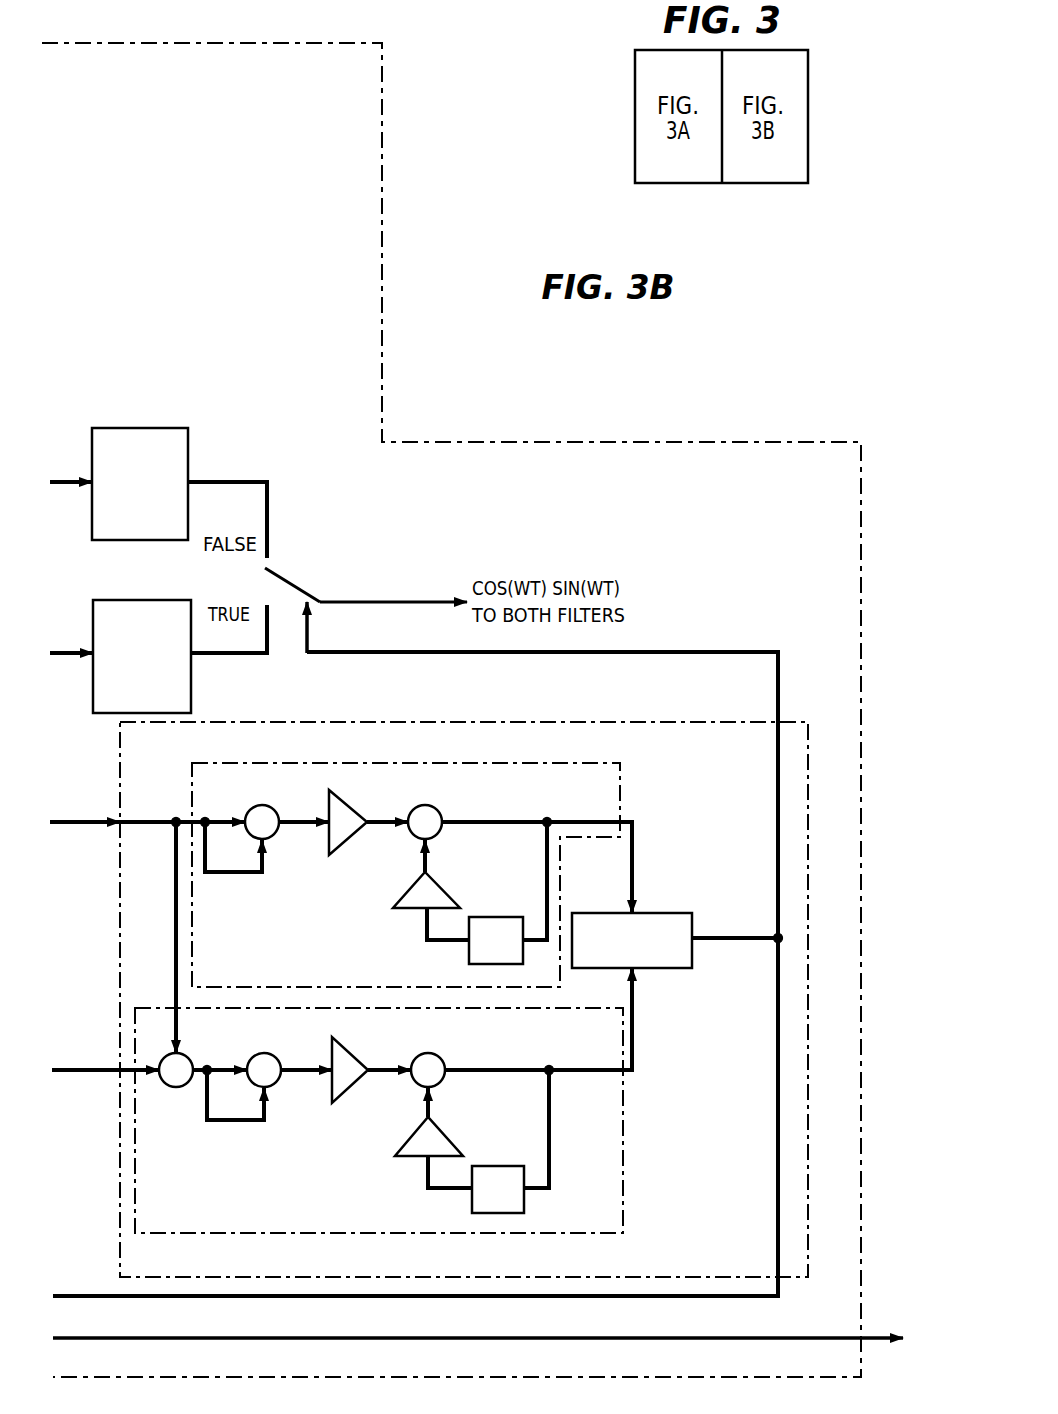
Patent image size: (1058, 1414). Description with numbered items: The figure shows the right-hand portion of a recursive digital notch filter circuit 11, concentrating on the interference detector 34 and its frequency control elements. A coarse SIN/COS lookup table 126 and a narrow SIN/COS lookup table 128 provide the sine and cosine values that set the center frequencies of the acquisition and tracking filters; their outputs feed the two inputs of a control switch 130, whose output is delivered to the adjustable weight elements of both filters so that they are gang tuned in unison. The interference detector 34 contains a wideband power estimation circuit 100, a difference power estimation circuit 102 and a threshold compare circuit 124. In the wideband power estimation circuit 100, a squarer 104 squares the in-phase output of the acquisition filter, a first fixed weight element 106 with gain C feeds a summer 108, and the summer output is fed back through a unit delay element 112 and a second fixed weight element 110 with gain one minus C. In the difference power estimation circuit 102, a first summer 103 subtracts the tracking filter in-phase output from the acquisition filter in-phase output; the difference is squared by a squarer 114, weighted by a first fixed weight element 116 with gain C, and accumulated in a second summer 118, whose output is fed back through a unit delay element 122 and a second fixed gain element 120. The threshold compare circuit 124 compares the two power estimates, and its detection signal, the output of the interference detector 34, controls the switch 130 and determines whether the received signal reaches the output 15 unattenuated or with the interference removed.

The recursive digital notch filter circuit 11 is at (578, 408).
The output 15 is at (865, 1338).
The interference detector 34 is at (434, 722).
The wideband power estimation circuit 100 is at (622, 772).
The difference power estimation circuit 102 is at (624, 1156).
The first summer 103 is at (173, 1087).
The squarer 104 is at (250, 810).
The first fixed weight element 106 is at (328, 812).
The summer 108 is at (455, 828).
The second fixed weight element 110 is at (408, 892).
The unit delay element 112 is at (490, 917).
The squarer 114 is at (252, 1056).
The first fixed weight element 116 is at (331, 1060).
The second summer 118 is at (446, 1078).
The second fixed gain element 120 is at (452, 1140).
The unit delay element 122 is at (525, 1200).
The threshold compare circuit 124 is at (668, 913).
The coarse SIN/COS lookup table 126 is at (165, 428).
The narrow SIN/COS lookup table 128 is at (130, 600).
The second control switch 130 is at (291, 580).